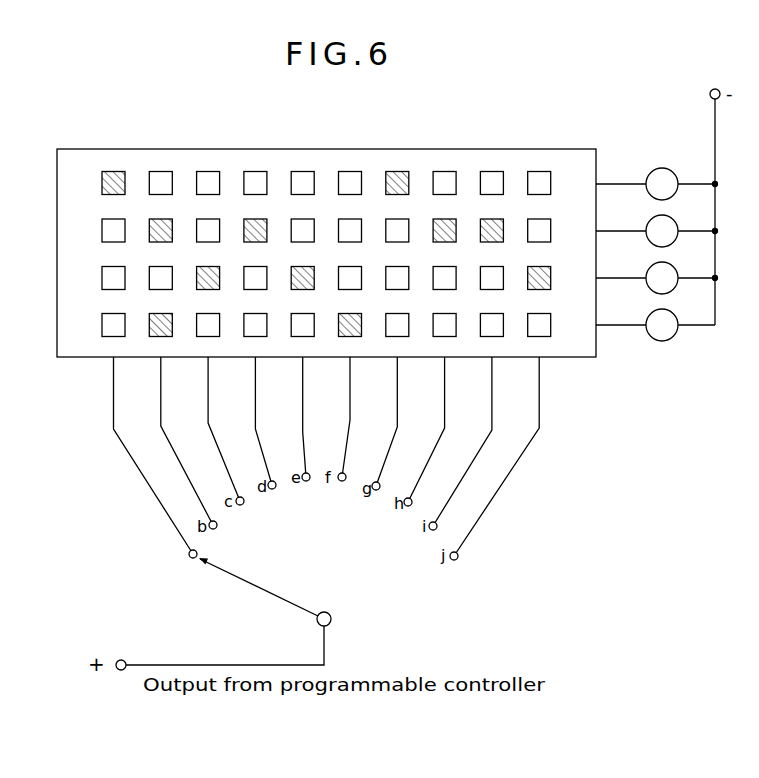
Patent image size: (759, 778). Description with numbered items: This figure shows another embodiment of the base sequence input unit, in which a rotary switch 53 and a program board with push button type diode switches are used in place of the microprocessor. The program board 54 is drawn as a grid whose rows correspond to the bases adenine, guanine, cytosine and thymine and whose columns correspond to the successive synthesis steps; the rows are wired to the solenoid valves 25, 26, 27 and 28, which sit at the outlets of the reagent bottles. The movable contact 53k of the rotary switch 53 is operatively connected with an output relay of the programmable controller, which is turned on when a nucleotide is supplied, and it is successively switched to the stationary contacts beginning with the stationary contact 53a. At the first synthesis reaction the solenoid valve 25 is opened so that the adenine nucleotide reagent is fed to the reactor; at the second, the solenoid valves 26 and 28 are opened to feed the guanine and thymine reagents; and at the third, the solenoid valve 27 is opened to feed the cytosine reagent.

The solenoid valve 25 is at (659, 178).
The solenoid valve 26 is at (669, 227).
The solenoid valve 27 is at (669, 274).
The solenoid valve 28 is at (669, 321).
The rotary switch 53 is at (220, 577).
The stationary contact 53a is at (172, 553).
The movable contact 53k is at (247, 580).
The sequence display board 54 is at (92, 358).